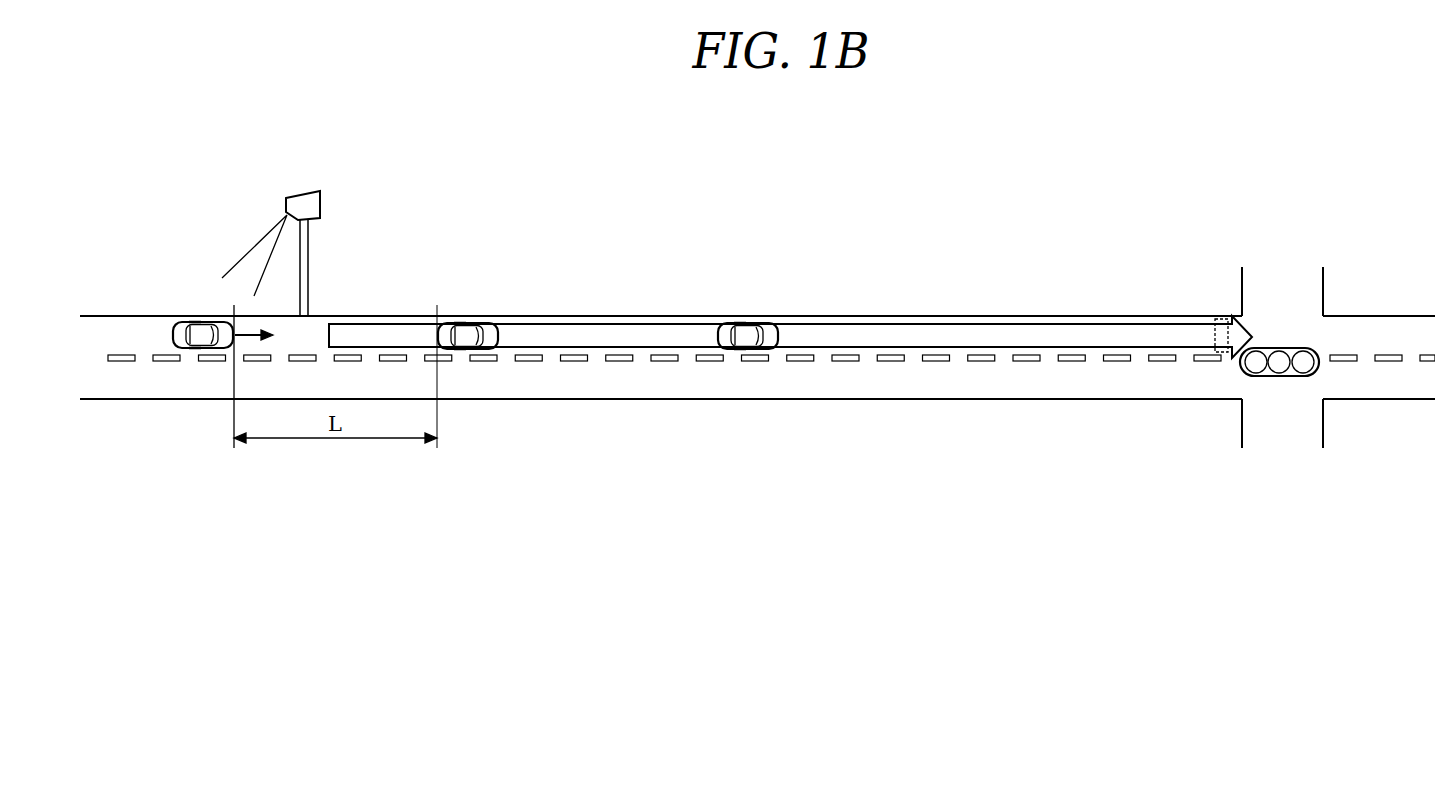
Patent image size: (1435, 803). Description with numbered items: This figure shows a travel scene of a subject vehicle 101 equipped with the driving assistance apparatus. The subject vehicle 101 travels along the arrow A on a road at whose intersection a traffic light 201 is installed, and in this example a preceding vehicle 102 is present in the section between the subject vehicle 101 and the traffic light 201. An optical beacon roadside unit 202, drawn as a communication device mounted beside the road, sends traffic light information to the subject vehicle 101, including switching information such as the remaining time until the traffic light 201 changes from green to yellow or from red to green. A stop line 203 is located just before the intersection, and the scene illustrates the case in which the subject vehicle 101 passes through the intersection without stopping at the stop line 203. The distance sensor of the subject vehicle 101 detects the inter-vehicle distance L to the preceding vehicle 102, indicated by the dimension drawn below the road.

The subject vehicle 101 is at (208, 323).
The preceding vehicle 102 is at (463, 322).
The traffic light 201 is at (1295, 378).
The optical beacon roadside unit 202 is at (308, 192).
The stop line 203 is at (1226, 353).
The arrow A is at (647, 322).